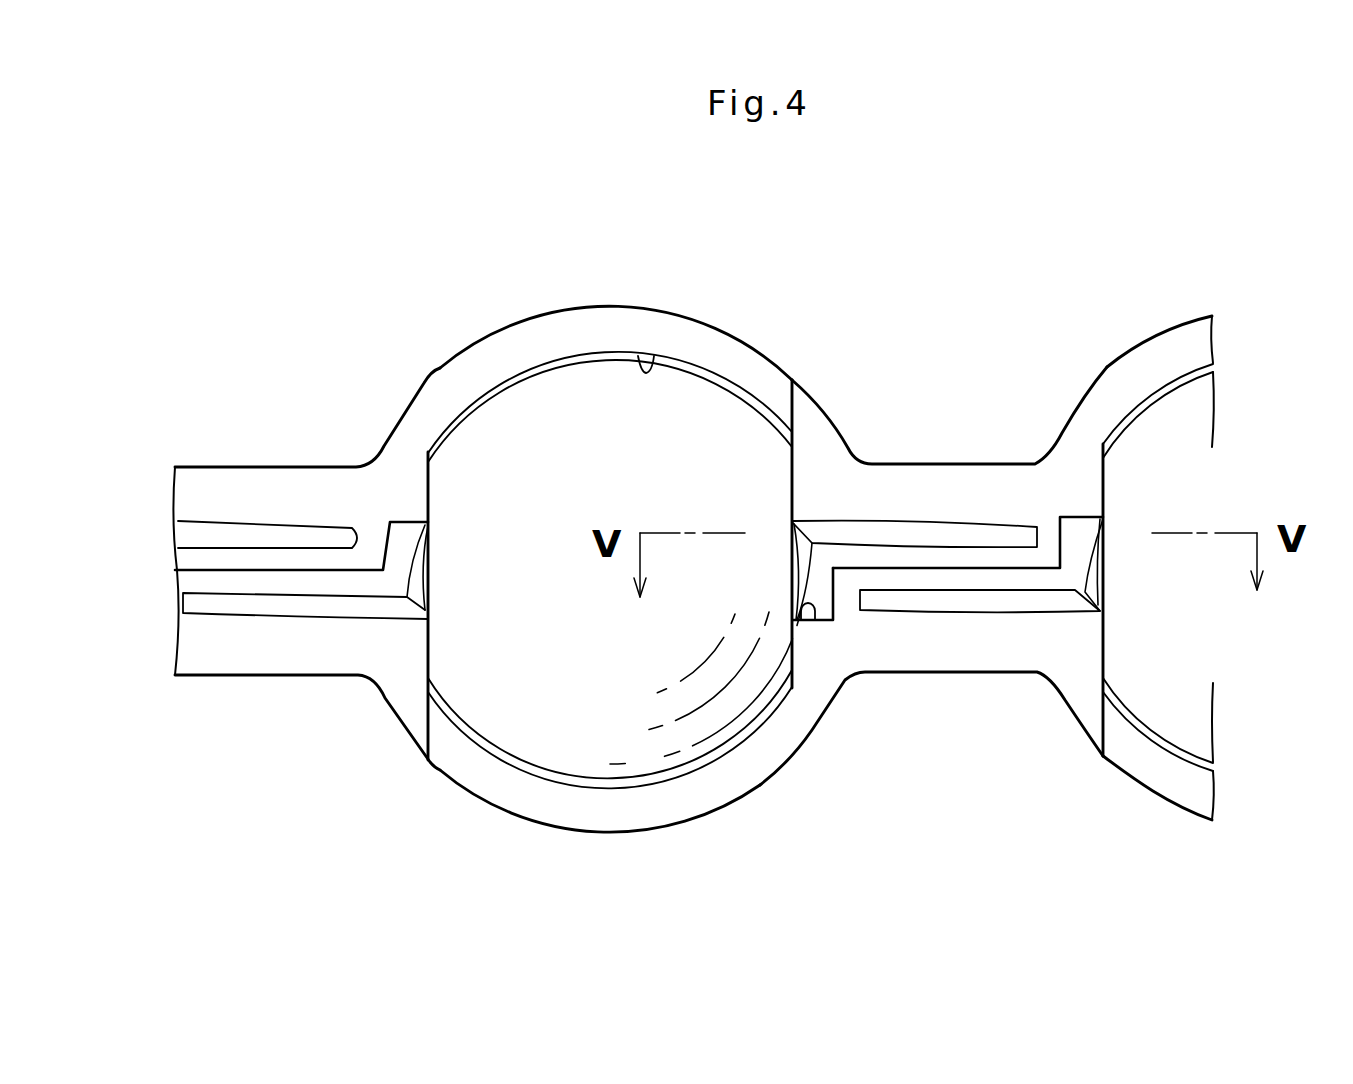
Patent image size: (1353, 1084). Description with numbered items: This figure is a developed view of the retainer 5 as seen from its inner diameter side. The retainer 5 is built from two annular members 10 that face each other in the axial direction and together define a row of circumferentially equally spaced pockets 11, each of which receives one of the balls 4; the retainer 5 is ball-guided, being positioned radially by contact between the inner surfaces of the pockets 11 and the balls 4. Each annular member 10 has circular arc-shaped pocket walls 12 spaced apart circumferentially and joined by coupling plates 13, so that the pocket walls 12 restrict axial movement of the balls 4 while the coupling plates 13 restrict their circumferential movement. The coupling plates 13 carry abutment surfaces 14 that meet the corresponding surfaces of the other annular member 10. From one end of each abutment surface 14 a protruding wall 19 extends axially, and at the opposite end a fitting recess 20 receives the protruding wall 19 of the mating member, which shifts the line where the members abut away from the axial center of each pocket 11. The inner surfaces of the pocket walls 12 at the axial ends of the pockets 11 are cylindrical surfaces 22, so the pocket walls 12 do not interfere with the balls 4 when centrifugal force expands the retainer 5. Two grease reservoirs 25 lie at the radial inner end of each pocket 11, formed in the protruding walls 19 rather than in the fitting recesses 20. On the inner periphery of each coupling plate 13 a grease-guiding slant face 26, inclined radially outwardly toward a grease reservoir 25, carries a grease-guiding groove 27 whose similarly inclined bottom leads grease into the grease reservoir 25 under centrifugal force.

The ball 4 is at (490, 412).
The retainer 5 is at (208, 462).
The annular member 10 is at (190, 497).
The pocket 11 is at (573, 353).
The pocket wall 12 is at (608, 310).
The coupling plate 13 is at (995, 473).
The abutment surface 14 is at (890, 568).
The protruding wall 19 is at (823, 592).
The fitting recess 20 is at (818, 628).
The cylindrical surface 22 is at (652, 367).
The grease reservoir 25 is at (420, 578).
The grease-guiding slant face 26 is at (938, 483).
The grease-guiding groove 27 is at (870, 533).